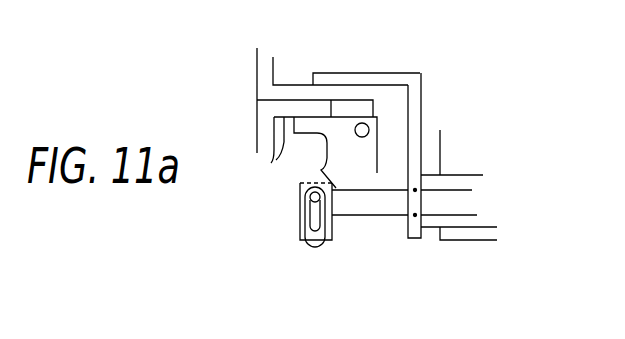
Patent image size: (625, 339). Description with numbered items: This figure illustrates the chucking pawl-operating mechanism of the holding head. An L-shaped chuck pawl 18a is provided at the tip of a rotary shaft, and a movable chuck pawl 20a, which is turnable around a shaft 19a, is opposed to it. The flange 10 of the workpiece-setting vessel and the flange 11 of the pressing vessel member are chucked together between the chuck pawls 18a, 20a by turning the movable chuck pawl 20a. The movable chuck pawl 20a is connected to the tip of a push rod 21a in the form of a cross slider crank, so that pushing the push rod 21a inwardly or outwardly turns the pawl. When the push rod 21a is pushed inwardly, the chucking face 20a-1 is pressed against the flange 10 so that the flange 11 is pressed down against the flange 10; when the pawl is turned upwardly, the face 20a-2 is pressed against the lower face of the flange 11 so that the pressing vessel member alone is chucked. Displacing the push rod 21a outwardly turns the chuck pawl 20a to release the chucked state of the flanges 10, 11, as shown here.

The flange of the workpiece-setting vessel 10 is at (292, 152).
The flange of the pressing vessel member 11 is at (313, 85).
The L-shaped chuck pawl 18a is at (337, 73).
The shaft 19a is at (362, 137).
The movable chuck pawl 20a is at (318, 172).
The chucking face 20a-1 is at (378, 148).
The face of the chuck pawl 20a-2 is at (353, 113).
The push rod 21a is at (387, 215).